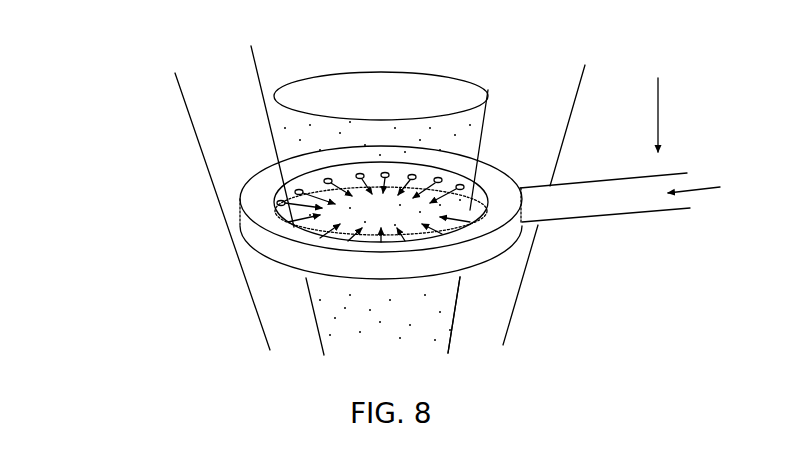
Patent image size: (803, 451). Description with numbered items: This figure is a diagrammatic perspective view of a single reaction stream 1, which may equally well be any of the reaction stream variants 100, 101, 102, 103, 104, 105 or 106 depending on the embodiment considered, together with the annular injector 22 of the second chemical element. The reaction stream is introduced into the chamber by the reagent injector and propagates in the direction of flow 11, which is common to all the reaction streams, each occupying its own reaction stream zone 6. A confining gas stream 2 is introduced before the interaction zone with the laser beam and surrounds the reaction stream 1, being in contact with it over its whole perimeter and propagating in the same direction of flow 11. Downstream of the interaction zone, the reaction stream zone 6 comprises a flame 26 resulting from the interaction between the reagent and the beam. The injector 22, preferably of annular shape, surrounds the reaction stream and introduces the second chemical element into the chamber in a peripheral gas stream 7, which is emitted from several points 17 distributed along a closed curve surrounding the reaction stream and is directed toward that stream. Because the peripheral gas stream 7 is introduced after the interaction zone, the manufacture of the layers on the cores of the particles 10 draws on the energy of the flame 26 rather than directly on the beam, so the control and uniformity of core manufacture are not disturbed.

The reaction stream 1 is at (388, 203).
The reaction stream 100 is at (388, 203).
The reaction stream 101 is at (388, 203).
The reaction stream 102 is at (388, 203).
The reaction stream 103 is at (388, 203).
The reaction stream 104 is at (388, 203).
The reaction stream 105 is at (388, 203).
The reaction stream 106 is at (388, 203).
The confining gas stream 2 is at (567, 85).
The peripheral gas stream 7 is at (471, 182).
The particles 10 is at (343, 337).
The direction of flow 11 is at (658, 110).
The points 17 is at (440, 178).
The injector 22 is at (503, 180).
The flame 26 is at (491, 329).
The reaction stream zone 6 is at (445, 323).